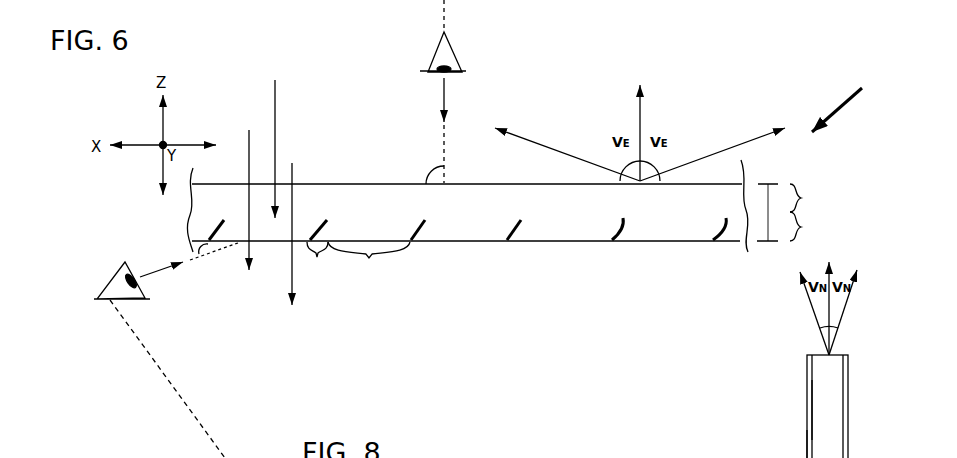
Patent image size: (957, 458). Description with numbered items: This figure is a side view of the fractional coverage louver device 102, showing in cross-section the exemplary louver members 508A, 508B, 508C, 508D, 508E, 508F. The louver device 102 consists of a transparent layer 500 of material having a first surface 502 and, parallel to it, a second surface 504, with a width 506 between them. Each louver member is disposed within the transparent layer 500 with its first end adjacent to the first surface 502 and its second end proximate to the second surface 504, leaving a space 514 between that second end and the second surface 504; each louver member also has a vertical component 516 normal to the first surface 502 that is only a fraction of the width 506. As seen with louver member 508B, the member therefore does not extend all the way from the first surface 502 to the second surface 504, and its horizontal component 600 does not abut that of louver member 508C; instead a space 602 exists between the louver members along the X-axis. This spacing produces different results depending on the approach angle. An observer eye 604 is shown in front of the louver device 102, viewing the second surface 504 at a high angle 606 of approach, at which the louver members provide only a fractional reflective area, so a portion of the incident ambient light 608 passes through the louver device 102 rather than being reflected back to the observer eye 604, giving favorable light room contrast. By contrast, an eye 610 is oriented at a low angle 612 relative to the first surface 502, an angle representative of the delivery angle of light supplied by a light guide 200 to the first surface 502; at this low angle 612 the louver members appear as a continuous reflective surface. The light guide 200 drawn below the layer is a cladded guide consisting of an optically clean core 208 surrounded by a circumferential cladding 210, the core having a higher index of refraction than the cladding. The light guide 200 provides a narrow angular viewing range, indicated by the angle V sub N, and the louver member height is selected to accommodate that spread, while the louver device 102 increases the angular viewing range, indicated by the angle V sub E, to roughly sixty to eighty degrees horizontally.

The fractional coverage louver device 102 is at (849, 100).
The light guide 200 is at (782, 406).
The core 208 is at (825, 408).
The circumferential cladding 210 is at (807, 457).
The transparent layer 500 is at (586, 237).
The first surface 502 is at (731, 243).
The second surface 504 is at (745, 172).
The width 506 is at (778, 181).
The louver member 508A is at (225, 222).
The louver member 508B is at (329, 222).
The louver member 508C is at (428, 222).
The louver member 508D is at (524, 222).
The louver member 508E is at (623, 222).
The louver member 508F is at (717, 222).
The space 514 is at (813, 198).
The vertical component 516 is at (813, 226).
The horizontal component 600 is at (319, 261).
The space 602 is at (369, 261).
The observer eye 604 is at (453, 50).
The high angle 606 is at (438, 168).
The incident ambient light 608 is at (275, 140).
The eye 610 is at (112, 285).
The low angle 612 is at (203, 248).